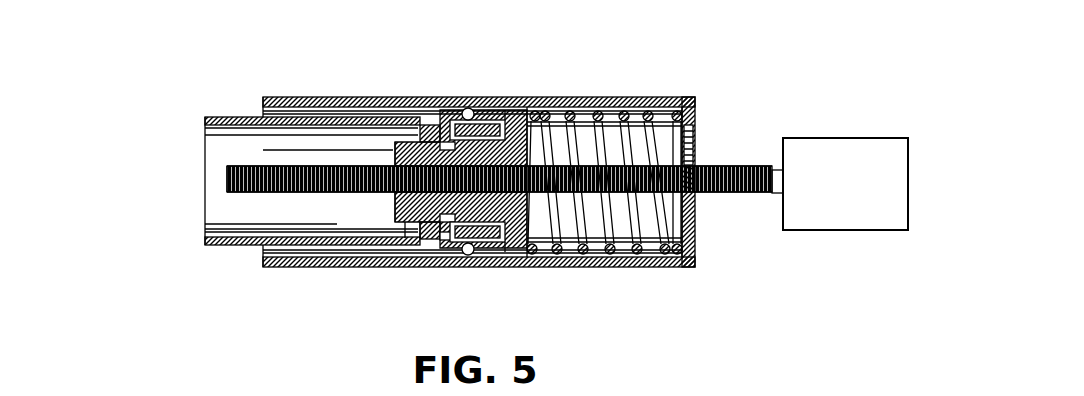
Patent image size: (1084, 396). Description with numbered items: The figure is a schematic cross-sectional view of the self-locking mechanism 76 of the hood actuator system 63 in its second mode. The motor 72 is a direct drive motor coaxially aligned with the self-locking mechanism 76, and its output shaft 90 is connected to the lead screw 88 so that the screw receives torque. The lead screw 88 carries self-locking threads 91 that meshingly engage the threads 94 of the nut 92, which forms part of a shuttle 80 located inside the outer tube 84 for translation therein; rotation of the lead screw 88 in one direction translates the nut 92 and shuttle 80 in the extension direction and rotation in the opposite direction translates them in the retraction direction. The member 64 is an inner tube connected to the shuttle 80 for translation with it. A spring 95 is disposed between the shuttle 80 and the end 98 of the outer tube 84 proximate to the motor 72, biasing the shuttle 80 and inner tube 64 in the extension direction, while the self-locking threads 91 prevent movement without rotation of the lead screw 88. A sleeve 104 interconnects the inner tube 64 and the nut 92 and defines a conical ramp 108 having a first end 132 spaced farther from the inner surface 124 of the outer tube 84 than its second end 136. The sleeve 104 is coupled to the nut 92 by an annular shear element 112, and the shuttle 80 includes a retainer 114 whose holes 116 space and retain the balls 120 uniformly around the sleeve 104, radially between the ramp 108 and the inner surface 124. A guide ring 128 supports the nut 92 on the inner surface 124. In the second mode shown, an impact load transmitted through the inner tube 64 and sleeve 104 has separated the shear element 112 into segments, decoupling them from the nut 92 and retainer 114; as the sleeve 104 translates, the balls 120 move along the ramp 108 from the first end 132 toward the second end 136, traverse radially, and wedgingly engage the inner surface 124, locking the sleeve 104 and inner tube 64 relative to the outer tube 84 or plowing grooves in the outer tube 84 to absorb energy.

The hood actuator system 63 is at (704, 72).
The inner tube 64 is at (232, 117).
The motor 72 is at (822, 232).
The self-locking mechanism 76 is at (328, 66).
The shuttle 80 is at (525, 140).
The outer tube 84 is at (302, 267).
The lead screw 88 is at (614, 195).
The output shaft 90 is at (777, 196).
The self-locking threads 91 is at (247, 193).
The nut 92 is at (395, 205).
The threads 94 is at (382, 163).
The spring 95 is at (668, 224).
The end 98 is at (698, 117).
The sleeve 104 is at (428, 240).
The ramp 108 is at (500, 262).
The shear element 112 is at (422, 125).
The retainer 114 is at (452, 112).
The holes 116 is at (487, 99).
The balls 120 is at (468, 108).
The inner surface 124 is at (640, 123).
The guide ring 128 is at (508, 98).
The first end 132 is at (545, 262).
The second end 136 is at (455, 252).